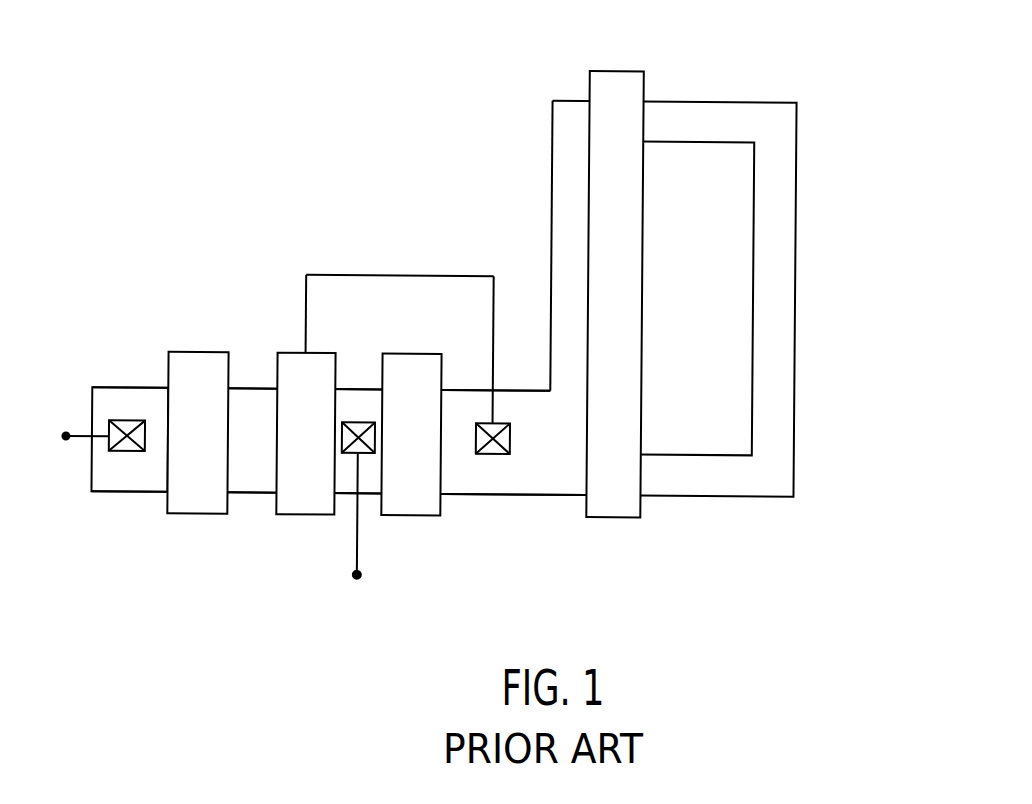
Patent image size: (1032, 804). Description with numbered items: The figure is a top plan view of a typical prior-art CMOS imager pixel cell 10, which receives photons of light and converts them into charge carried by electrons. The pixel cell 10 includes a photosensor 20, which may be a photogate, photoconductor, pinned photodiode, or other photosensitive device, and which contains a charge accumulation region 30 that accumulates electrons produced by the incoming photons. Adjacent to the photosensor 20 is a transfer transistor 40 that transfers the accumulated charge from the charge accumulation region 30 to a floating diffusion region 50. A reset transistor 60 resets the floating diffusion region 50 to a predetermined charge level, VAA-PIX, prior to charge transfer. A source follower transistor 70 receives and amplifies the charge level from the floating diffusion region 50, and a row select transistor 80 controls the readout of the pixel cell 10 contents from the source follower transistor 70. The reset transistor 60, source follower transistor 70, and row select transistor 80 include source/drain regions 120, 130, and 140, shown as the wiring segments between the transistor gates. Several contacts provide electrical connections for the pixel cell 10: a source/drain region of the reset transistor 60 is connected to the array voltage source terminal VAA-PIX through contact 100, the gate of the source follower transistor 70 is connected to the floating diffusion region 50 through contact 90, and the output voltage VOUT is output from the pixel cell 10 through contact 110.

The CMOS imager pixel cell 10 is at (475, 315).
The photosensor 20 is at (806, 288).
The charge accumulation region 30 is at (681, 295).
The transfer transistor 40 is at (644, 79).
The floating diffusion region 50 is at (522, 480).
The reset transistor 60 is at (402, 449).
The source follower transistor 70 is at (295, 450).
The row select transistor 80 is at (188, 451).
The contact 90 is at (494, 454).
The contact 100 is at (359, 423).
The contact 110 is at (129, 423).
The source/drain region 120 is at (368, 483).
The source/drain region 130 is at (248, 485).
The source/drain region 140 is at (120, 483).